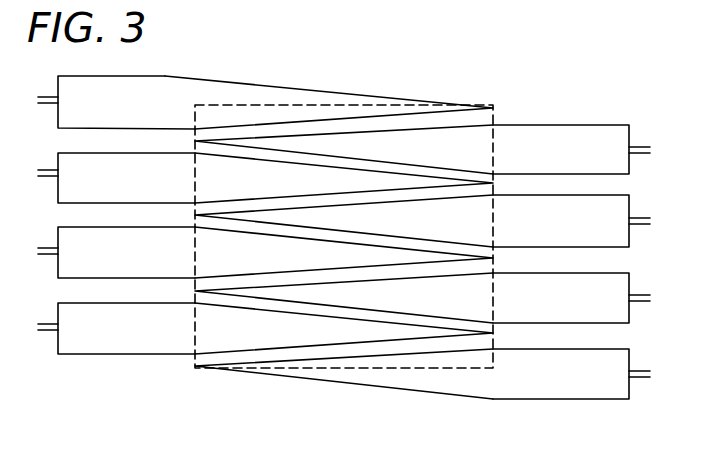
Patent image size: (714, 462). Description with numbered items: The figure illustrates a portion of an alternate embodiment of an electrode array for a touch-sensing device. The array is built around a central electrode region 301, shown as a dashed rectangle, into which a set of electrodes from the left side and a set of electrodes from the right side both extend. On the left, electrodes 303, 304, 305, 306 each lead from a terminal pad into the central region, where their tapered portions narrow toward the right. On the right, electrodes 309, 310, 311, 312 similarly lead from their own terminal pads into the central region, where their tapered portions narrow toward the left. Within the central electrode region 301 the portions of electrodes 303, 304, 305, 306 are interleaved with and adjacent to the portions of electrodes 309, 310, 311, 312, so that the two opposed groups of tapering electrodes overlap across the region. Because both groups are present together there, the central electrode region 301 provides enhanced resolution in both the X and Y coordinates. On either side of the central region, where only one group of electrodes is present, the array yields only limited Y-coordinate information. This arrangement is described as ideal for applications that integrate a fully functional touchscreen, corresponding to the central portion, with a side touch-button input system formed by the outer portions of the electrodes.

The central electrode region 301 is at (493, 303).
The electrode 303 is at (158, 128).
The electrode 304 is at (158, 203).
The electrode 305 is at (158, 278).
The electrode 306 is at (158, 354).
The electrode 309 is at (603, 174).
The electrode 310 is at (603, 247).
The electrode 311 is at (603, 323).
The electrode 312 is at (603, 399).